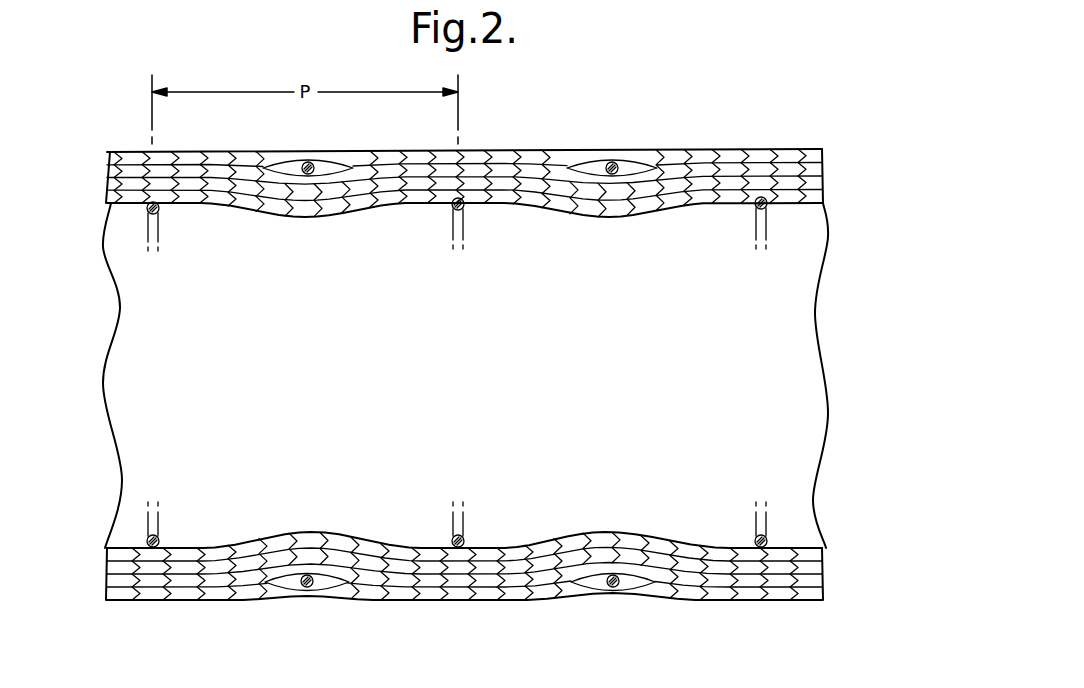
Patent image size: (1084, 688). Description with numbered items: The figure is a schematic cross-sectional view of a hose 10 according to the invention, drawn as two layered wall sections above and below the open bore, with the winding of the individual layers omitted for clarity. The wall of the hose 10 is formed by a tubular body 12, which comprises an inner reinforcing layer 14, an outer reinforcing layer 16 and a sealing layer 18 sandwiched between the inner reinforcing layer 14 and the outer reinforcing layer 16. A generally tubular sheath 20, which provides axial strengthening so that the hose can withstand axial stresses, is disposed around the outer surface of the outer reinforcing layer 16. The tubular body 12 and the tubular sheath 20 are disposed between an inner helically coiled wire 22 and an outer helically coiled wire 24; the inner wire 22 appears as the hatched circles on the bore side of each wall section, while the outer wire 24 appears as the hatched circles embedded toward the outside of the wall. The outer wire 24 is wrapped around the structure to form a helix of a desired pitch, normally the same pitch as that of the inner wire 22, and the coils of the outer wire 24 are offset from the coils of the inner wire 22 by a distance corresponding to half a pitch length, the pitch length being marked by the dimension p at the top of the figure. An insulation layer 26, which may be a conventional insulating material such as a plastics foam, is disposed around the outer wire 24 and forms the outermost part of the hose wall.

The hose 10 is at (862, 163).
The tubular body 12 is at (832, 158).
The inner reinforcing layer 14 is at (180, 198).
The outer reinforcing layer 16 is at (587, 188).
The sealing layer 18 is at (378, 193).
The tubular sheath 20 is at (696, 166).
The inner helically coiled wire 22 is at (147, 215).
The outer helically coiled wire 24 is at (325, 160).
The insulation layer 26 is at (238, 157).